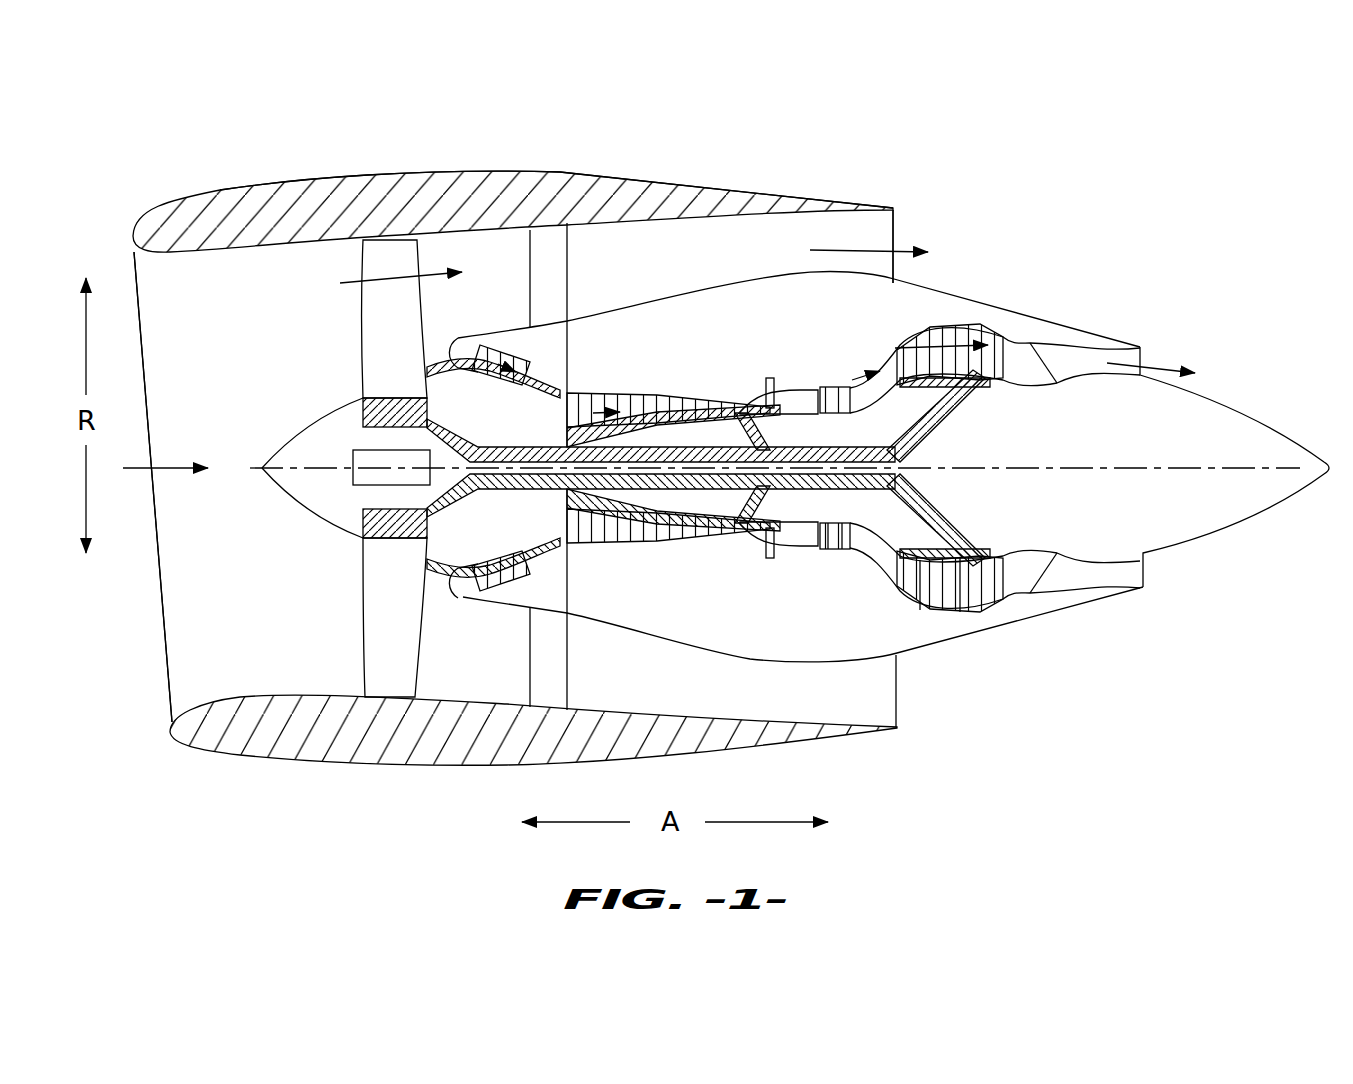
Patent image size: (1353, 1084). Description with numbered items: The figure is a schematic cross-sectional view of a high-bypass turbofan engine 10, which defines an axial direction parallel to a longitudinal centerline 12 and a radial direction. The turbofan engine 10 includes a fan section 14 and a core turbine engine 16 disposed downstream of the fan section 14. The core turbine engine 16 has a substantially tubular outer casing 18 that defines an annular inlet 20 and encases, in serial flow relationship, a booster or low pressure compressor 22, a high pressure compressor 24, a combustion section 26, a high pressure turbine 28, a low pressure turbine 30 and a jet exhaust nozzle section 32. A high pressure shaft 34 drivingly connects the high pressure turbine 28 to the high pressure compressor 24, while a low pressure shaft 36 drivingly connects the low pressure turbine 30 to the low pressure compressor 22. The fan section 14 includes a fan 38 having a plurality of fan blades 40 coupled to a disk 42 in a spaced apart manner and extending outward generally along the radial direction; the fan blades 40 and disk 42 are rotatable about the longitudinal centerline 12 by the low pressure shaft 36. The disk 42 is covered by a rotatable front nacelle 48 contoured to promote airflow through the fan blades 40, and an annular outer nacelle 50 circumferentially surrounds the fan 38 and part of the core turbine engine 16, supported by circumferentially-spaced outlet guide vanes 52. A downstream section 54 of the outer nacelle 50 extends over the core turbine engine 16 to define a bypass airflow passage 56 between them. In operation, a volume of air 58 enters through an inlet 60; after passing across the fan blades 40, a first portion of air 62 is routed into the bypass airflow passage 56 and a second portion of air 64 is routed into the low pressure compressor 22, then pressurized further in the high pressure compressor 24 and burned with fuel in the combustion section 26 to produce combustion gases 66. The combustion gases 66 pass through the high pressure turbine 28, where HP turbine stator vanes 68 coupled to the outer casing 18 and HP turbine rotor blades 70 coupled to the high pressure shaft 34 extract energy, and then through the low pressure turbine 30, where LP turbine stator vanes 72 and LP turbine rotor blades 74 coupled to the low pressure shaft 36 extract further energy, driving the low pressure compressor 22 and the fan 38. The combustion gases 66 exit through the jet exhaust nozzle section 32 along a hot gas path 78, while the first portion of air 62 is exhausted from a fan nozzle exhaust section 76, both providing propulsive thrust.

The turbofan engine 10 is at (1127, 240).
The longitudinal centerline 12 is at (1062, 462).
The fan section 14 is at (440, 169).
The core turbine engine 16 is at (731, 343).
The outer casing 18 is at (750, 648).
The annular inlet 20 is at (468, 586).
The low pressure compressor 22 is at (537, 550).
The high pressure compressor 24 is at (598, 549).
The combustion section 26 is at (783, 547).
The high pressure turbine 28 is at (853, 542).
The low pressure turbine 30 is at (990, 607).
The jet exhaust nozzle section 32 is at (1142, 357).
The high pressure shaft 34 is at (810, 423).
The low pressure shaft 36 is at (533, 453).
The fan 38 is at (345, 317).
The fan blades 40 is at (357, 643).
The disk 42 is at (360, 407).
The rotatable front nacelle 48 is at (290, 440).
The outer nacelle 50 is at (423, 767).
The outlet guide vanes 52 is at (570, 247).
The downstream section of the nacelle 54 is at (716, 190).
The bypass airflow passage 56 is at (712, 267).
The volume of air 58 is at (163, 463).
The inlet 60 is at (167, 688).
The first portion of air 62 is at (377, 273).
The second portion of air 64 is at (443, 347).
The combustion gases 66 is at (933, 330).
The HP turbine stator vanes 68 is at (827, 550).
The HP turbine rotor blades 70 is at (840, 553).
The LP turbine stator vanes 72 is at (900, 587).
The LP turbine rotor blades 74 is at (913, 592).
The fan nozzle exhaust section 76 is at (897, 225).
The hot gas path 78 is at (886, 355).